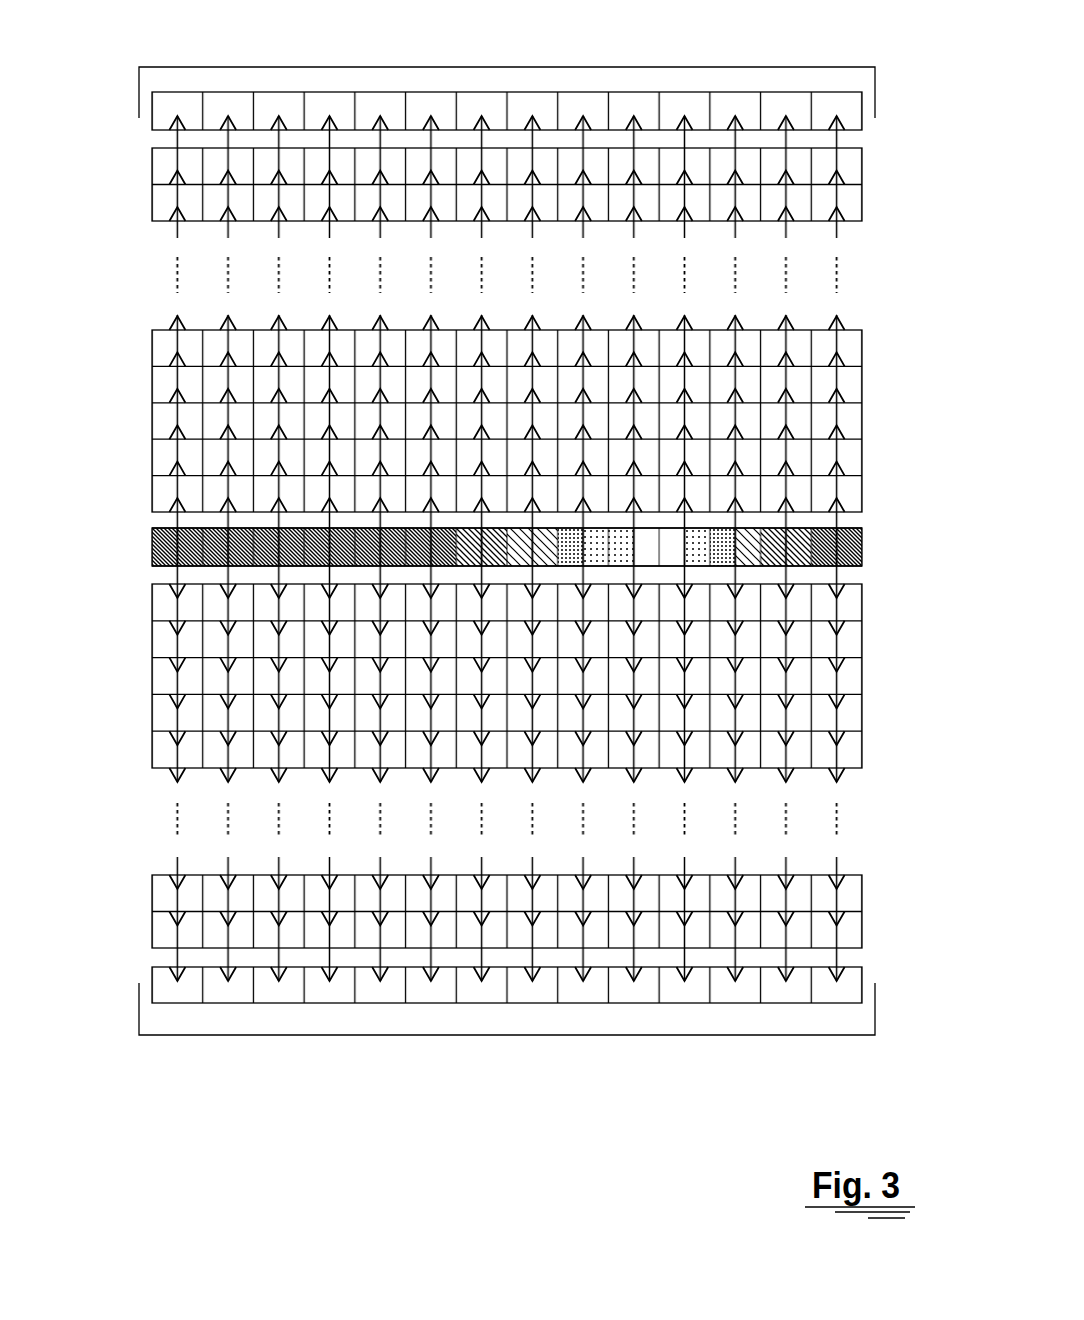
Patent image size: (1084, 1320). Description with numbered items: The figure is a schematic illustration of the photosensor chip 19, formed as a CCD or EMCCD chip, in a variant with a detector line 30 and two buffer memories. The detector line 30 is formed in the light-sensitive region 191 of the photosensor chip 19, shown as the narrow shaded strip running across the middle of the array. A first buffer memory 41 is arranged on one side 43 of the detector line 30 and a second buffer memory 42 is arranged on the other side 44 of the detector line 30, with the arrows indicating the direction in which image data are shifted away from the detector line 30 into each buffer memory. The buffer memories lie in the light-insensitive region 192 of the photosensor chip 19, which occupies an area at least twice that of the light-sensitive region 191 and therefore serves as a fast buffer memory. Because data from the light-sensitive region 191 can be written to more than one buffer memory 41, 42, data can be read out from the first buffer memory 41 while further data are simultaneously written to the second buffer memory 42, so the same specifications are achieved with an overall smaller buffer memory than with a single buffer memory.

The photosensor chip 19 is at (504, 562).
The light-insensitive region 192 is at (753, 67).
The light-sensitive region 191 is at (860, 568).
The first buffer memory 41 is at (862, 383).
The second buffer memory 42 is at (862, 633).
The detector line 30 is at (862, 550).
The one side of the detector line 43 is at (152, 528).
The other side of the detector line 44 is at (152, 566).